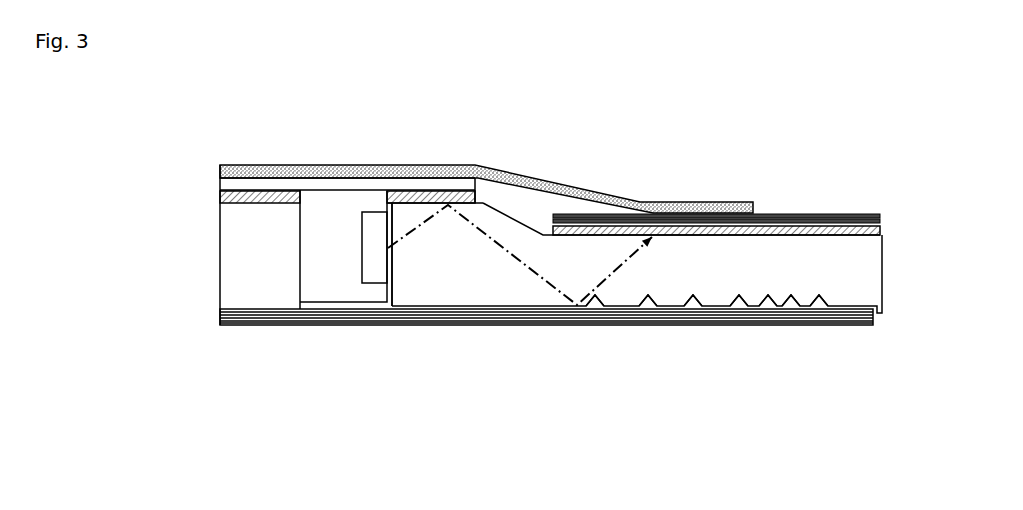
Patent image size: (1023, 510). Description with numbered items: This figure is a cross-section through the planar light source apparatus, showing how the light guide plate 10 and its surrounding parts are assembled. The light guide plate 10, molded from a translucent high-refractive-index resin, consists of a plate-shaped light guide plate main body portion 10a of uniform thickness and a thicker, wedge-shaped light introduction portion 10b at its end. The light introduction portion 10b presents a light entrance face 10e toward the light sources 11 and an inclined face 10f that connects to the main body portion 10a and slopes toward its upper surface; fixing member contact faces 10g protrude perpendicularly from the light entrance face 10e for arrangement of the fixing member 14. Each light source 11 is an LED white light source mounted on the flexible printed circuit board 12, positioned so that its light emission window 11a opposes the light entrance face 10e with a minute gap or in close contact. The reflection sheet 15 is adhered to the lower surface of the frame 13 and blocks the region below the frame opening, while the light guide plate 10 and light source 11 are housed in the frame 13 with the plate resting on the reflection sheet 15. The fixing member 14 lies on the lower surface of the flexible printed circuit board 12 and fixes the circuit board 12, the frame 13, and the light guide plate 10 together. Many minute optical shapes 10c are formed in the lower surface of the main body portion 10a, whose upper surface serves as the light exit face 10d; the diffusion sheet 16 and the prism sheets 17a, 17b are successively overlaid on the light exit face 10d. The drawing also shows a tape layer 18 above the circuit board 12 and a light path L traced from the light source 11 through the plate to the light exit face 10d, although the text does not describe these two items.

The light guide plate 10 is at (870, 258).
The light guide plate main body portion 10a is at (838, 355).
The light introduction portion 10b is at (573, 358).
The minute optical shapes 10c is at (648, 300).
The light exit face 10d is at (800, 222).
The light entrance face 10e is at (388, 286).
The inclined face 10f is at (508, 213).
The fixing member contact faces 10g is at (433, 200).
The light sources 11 is at (321, 200).
The light emission window 11a is at (370, 218).
The flexible printed circuit board 12 is at (272, 188).
The frame 13 is at (233, 250).
The fixing member 14 is at (240, 197).
The reflection sheet 15 is at (230, 319).
The diffusion sheet 16 is at (882, 231).
The prism sheet 17a is at (882, 213).
The prism sheet 17b is at (882, 221).
The light shielding tape 18 is at (232, 171).
The light ray L is at (532, 270).